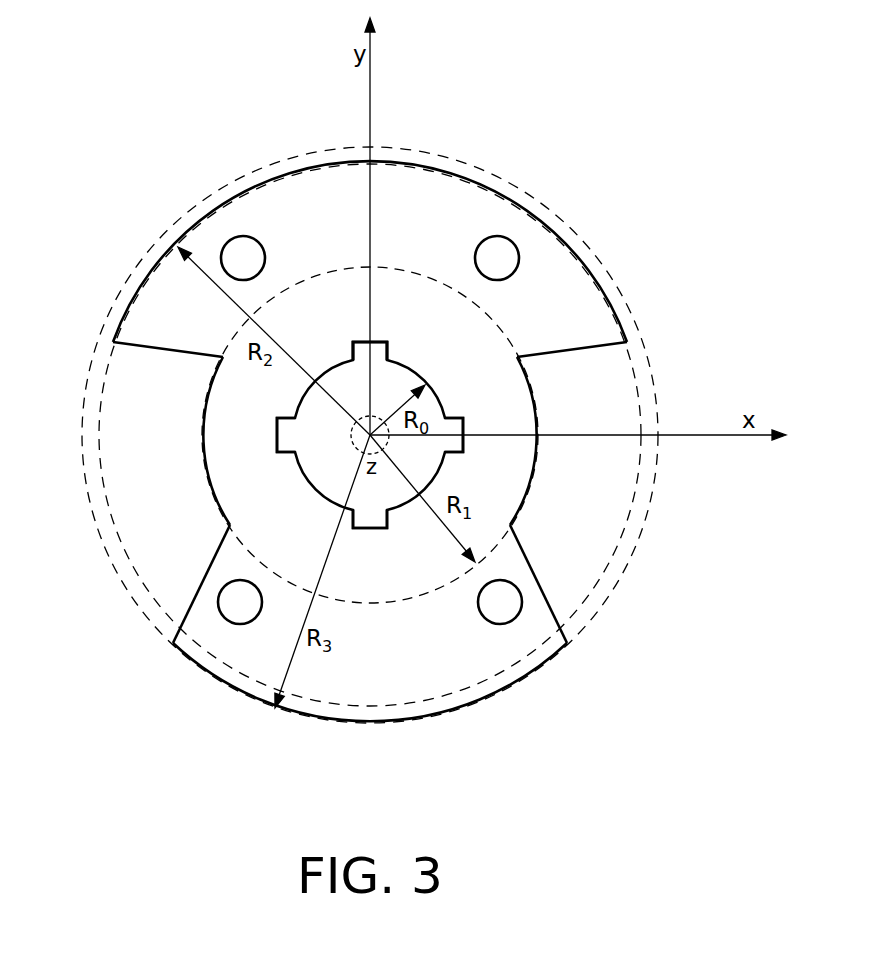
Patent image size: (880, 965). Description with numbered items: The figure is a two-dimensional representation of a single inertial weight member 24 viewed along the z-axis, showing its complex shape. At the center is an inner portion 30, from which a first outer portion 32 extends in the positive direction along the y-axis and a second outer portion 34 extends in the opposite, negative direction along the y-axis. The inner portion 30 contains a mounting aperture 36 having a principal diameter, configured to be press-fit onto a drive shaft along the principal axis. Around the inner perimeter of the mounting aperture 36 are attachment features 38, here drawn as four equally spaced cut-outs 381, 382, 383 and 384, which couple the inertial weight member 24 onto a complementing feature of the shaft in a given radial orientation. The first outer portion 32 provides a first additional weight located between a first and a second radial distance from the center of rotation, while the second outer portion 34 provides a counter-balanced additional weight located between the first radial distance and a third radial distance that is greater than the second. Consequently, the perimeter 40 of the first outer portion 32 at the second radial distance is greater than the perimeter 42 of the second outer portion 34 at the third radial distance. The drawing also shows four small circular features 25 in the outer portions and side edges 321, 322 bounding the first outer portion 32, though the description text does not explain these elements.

The inertial weight member 24 is at (705, 148).
The holes 25 is at (243, 258).
The inner portion 30 is at (485, 363).
The first outer portion 32 is at (337, 228).
The first flat cut-out 321 is at (168, 381).
The second flat cut-out 322 is at (572, 381).
The second outer portion 34 is at (442, 653).
The mounting aperture 36 is at (337, 450).
The attachment feature 38 is at (395, 346).
The attachment feature 381 is at (345, 332).
The attachment feature 382 is at (482, 418).
The attachment feature 383 is at (390, 546).
The attachment feature 384 is at (258, 451).
The perimeter 40 is at (283, 171).
The perimeter 42 is at (315, 723).